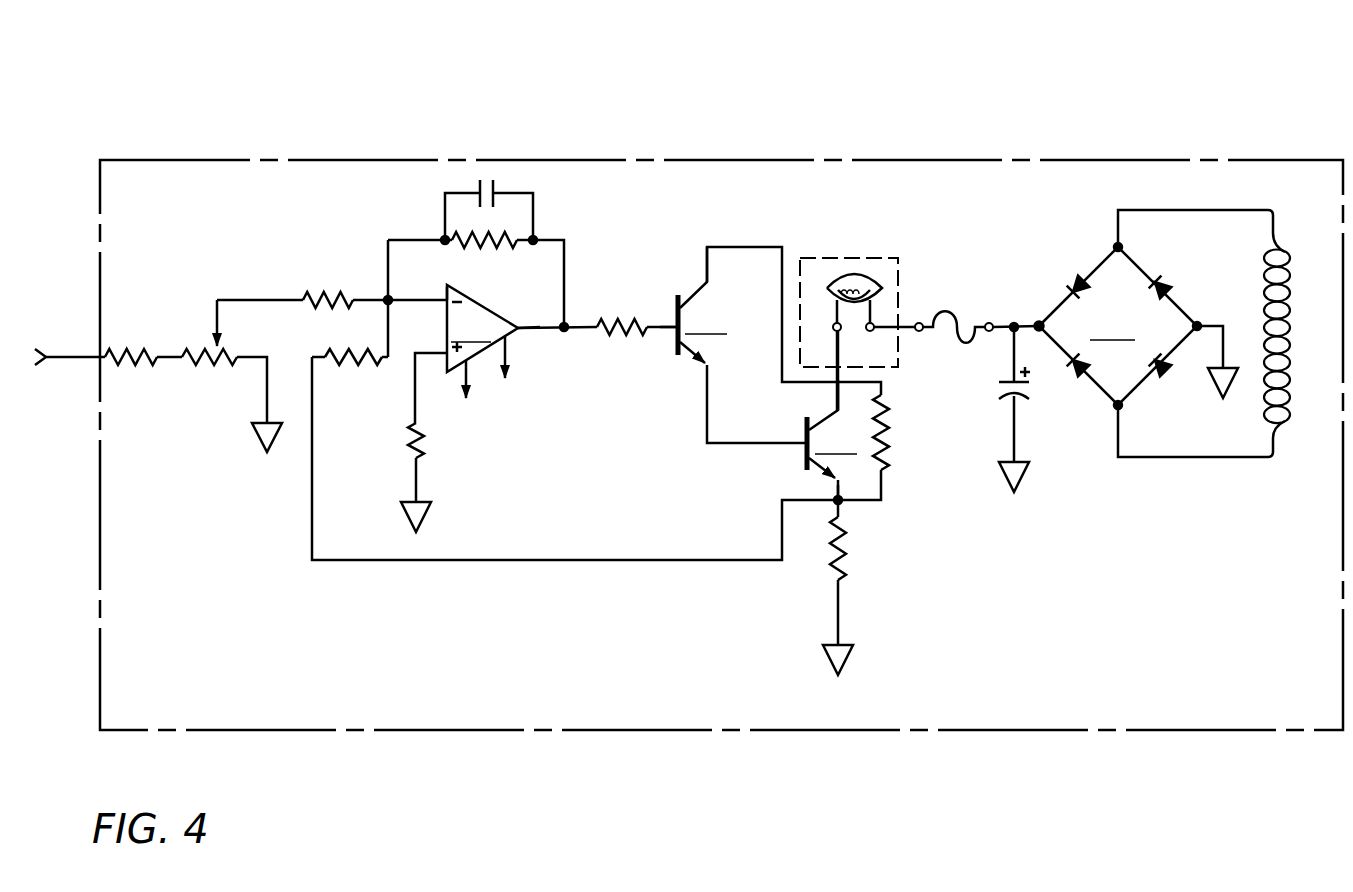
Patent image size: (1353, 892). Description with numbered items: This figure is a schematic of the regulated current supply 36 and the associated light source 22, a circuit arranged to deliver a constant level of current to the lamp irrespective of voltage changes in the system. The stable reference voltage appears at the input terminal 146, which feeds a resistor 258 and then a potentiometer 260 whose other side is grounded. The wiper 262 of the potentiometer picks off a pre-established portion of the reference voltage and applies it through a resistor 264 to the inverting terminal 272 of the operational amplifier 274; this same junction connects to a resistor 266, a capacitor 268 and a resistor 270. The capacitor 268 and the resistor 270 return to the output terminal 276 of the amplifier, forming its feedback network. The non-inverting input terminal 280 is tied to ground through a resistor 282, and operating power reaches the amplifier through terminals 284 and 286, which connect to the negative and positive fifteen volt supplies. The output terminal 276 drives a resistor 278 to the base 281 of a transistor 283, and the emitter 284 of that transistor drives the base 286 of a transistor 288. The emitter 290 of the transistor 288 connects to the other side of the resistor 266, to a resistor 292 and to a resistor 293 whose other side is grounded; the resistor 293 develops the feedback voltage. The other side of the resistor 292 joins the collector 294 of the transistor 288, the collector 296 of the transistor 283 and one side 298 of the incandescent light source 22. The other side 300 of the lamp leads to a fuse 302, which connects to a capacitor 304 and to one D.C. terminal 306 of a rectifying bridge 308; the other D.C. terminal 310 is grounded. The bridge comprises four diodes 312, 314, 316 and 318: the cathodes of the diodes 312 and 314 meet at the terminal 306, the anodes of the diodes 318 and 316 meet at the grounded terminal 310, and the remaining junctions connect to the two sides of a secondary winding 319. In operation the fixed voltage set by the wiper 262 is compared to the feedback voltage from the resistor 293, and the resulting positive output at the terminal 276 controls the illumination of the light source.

The regulated current supply 36 is at (687, 183).
The terminal 146 is at (68, 360).
The resistor 258 is at (130, 352).
The potentiometer 260 is at (230, 352).
The wiper 262 is at (213, 318).
The resistor 264 is at (312, 298).
The resistor 266 is at (355, 363).
The capacitor 268 is at (498, 195).
The resistor 270 is at (505, 245).
The inverting terminal 272 is at (445, 292).
The operational amplifier 274 is at (492, 328).
The output terminal 276 is at (522, 332).
The resistor 278 is at (606, 325).
The non-inverting input terminal 280 is at (445, 352).
The resistor 282 is at (409, 446).
The terminal 284 is at (468, 364).
The terminal 286 is at (505, 342).
The base 281 is at (675, 302).
The transistor 283 is at (779, 321).
The collector 296 is at (706, 290).
The transistor 288 is at (832, 424).
The collector 294 is at (830, 410).
The emitter 290 is at (832, 482).
The resistor 292 is at (888, 462).
The resistor 293 is at (845, 547).
The light source 22 is at (825, 270).
The one side of the light source 298 is at (832, 330).
The other side of the lamp 300 is at (868, 332).
The fuse 302 is at (940, 315).
The capacitor 304 is at (998, 388).
The D.C. terminal 306 is at (1038, 322).
The rectifying bridge 308 is at (1120, 326).
The D.C. terminal 310 is at (1199, 322).
The diode 312 is at (1080, 282).
The diode 314 is at (1081, 372).
The diode 316 is at (1174, 372).
The diode 318 is at (1164, 284).
The secondary winding 319 is at (1287, 268).